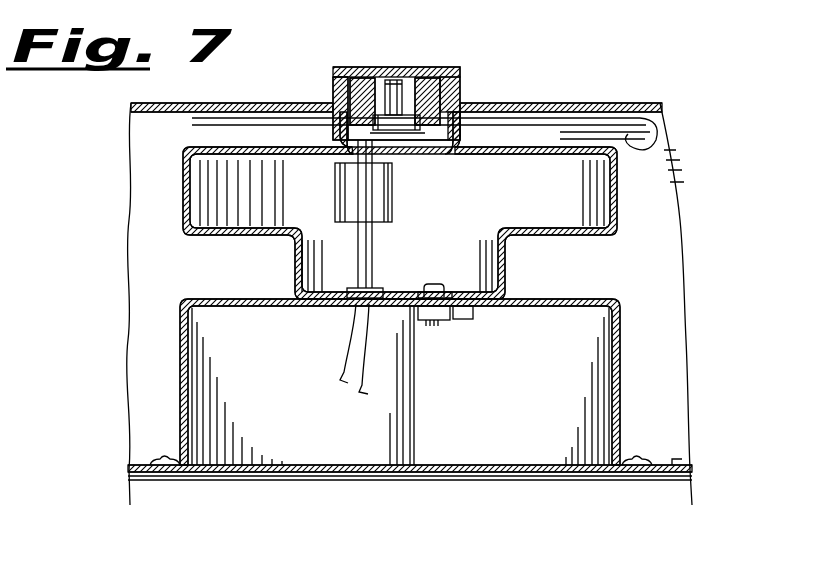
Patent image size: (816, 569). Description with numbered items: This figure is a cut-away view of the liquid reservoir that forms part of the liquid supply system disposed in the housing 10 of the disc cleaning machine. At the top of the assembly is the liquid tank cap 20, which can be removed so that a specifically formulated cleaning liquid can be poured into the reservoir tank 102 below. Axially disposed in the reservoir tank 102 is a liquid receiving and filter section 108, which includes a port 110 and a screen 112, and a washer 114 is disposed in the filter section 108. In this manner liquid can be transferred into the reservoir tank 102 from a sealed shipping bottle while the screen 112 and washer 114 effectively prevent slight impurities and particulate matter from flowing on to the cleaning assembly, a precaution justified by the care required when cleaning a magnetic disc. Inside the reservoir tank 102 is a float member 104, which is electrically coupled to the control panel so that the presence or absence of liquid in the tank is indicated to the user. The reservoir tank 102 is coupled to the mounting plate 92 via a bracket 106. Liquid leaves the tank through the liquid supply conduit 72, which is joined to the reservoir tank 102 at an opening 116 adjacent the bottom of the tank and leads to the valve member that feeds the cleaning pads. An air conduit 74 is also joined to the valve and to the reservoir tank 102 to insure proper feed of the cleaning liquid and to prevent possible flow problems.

The housing 10 is at (624, 104).
The liquid tank cap 20 is at (462, 78).
The liquid supply conduit 72 is at (470, 312).
The air conduit 74 is at (660, 140).
The mounting plate 92 is at (678, 460).
The reservoir tank 102 is at (568, 148).
The float member 104 is at (392, 205).
The bracket 106 is at (620, 372).
The liquid receiving and filter section 108 is at (345, 100).
The port 110 is at (392, 95).
The screen 112 is at (452, 145).
The washer 114 is at (372, 97).
The opening 116 is at (430, 318).